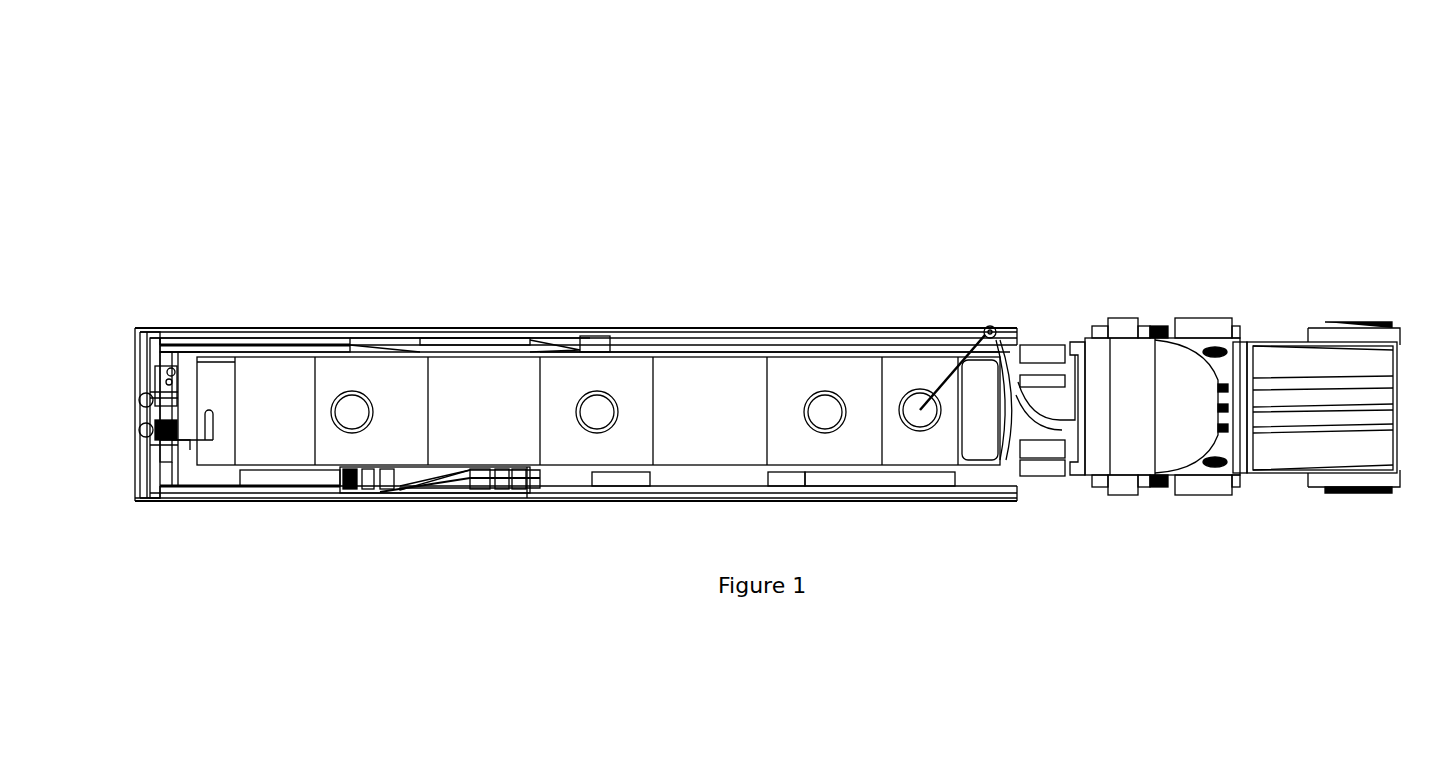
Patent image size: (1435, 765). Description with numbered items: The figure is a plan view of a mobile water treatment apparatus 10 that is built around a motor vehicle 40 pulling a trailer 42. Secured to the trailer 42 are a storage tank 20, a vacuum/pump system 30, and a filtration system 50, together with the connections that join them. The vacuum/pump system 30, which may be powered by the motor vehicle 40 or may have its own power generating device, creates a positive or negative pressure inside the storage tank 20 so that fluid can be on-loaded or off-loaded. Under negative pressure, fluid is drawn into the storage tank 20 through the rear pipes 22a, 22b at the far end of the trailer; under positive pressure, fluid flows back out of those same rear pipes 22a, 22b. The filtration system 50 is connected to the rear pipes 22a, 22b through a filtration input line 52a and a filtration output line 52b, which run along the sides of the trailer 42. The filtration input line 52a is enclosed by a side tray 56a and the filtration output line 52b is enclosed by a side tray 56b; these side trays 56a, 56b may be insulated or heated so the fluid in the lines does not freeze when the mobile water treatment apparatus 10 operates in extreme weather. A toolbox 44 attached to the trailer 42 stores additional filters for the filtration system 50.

The mobile water treatment apparatus 10 is at (578, 212).
The storage tank 20 is at (703, 395).
The rear pipe 22a is at (143, 435).
The rear pipe 22b is at (143, 398).
The vacuum/pump system 30 is at (1078, 335).
The motor vehicle 40 is at (1270, 355).
The trailer 42 is at (630, 330).
The toolbox 44 is at (428, 327).
The filtration system 50 is at (412, 498).
The filtration input line 52a is at (173, 500).
The filtration output line 52b is at (175, 328).
The side tray 56a is at (235, 500).
The side tray 56b is at (232, 328).